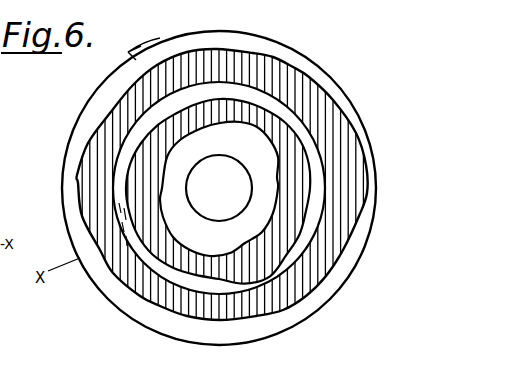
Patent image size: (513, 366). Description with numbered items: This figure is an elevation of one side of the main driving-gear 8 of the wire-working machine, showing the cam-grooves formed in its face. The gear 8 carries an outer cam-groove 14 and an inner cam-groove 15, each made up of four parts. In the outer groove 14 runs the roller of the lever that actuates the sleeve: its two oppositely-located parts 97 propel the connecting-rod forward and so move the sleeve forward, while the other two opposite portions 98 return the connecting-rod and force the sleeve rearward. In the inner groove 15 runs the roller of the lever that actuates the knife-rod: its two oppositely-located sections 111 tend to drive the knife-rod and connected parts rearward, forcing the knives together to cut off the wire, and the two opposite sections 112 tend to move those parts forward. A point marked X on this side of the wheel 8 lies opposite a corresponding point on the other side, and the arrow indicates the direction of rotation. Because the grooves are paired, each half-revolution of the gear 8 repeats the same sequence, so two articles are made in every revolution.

The main driving-gear 8 is at (88, 100).
The oppositely-located parts of outer cam-groove 97 is at (341, 135).
The opposite portions of outer cam-groove 98 is at (143, 92).
The oppositely-located sections of inner cam-groove 111 is at (278, 120).
The oppositely-located sections of inner cam-groove 112 is at (157, 152).
The inner cam-groove 15 is at (236, 258).
The outer cam-groove 14 is at (168, 292).